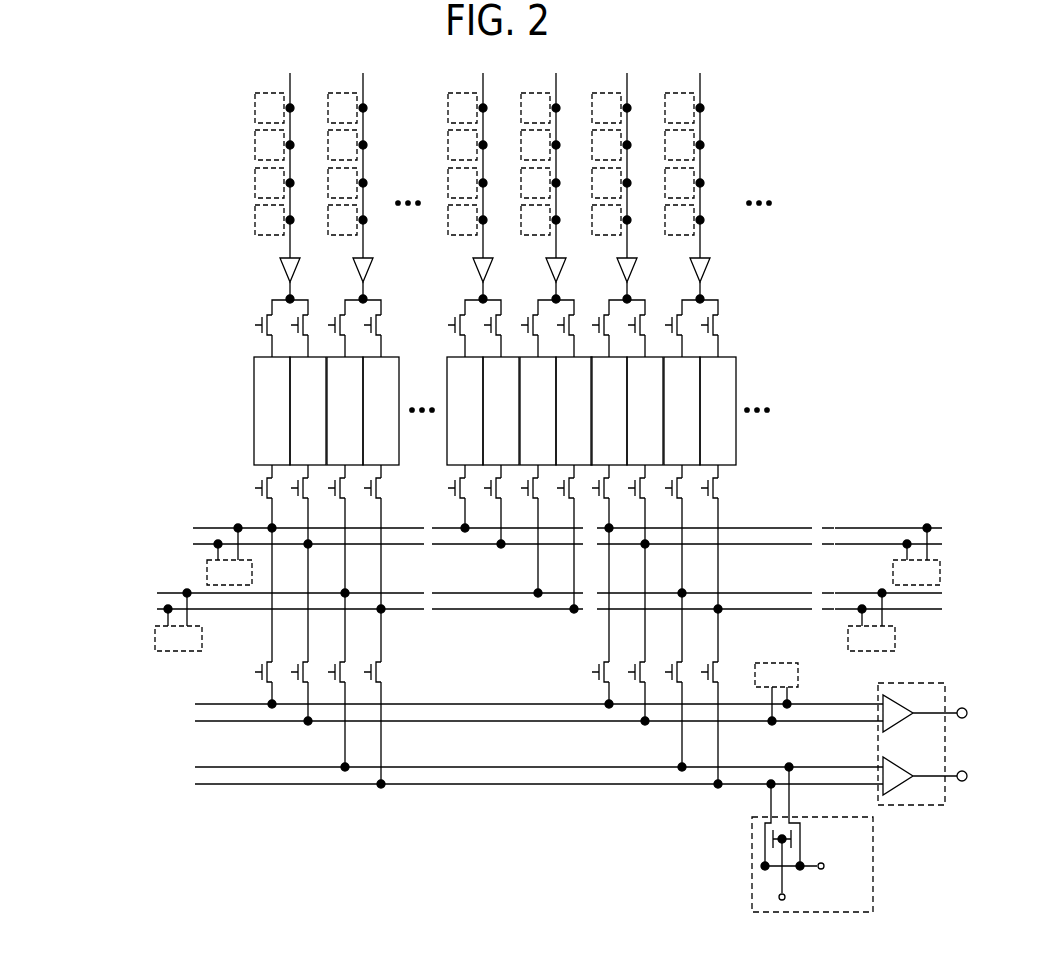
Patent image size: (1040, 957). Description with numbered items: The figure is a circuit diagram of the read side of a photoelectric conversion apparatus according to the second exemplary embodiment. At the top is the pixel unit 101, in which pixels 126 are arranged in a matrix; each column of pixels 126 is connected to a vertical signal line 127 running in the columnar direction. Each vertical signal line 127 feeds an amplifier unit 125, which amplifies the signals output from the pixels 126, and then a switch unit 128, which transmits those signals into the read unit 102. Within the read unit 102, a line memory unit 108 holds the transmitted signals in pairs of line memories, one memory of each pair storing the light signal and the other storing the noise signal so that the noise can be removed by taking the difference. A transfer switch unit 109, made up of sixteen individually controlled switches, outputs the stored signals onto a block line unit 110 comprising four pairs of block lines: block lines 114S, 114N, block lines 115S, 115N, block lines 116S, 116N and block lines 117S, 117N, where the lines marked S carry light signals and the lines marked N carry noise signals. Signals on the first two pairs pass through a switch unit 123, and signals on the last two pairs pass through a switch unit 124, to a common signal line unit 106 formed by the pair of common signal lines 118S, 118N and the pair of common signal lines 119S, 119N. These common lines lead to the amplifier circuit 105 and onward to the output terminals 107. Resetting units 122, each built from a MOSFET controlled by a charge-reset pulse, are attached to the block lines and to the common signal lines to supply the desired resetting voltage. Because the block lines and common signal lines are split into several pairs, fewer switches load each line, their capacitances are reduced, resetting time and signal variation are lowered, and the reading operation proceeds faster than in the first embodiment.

The pixel unit 101 is at (157, 73).
The read unit 102 is at (84, 622).
The amplifier circuit 105 is at (945, 690).
The common signal line 106 is at (138, 700).
The output terminal 107 is at (967, 774).
The line memory unit 108 is at (246, 357).
The switch unit 109 is at (246, 477).
The horizontal output line group 110 is at (138, 527).
The block line 114S is at (483, 530).
The block line 114N is at (395, 546).
The block line 115S is at (500, 595).
The block line 115N is at (398, 611).
The block line 116S is at (788, 527).
The block line 116N is at (853, 543).
The block line 117S is at (802, 577).
The block line 117N is at (848, 608).
The common signal line 118S is at (500, 705).
The common signal line 118N is at (437, 722).
The common signal line 119S is at (508, 768).
The common signal line 119N is at (440, 785).
The resetting unit 122 is at (207, 566).
The switch unit 123 is at (254, 662).
The switch unit 124 is at (585, 662).
The amplifier unit 125 is at (246, 250).
The pixel 126 is at (253, 184).
The vertical signal line 127 is at (701, 118).
The switch unit 128 is at (246, 307).